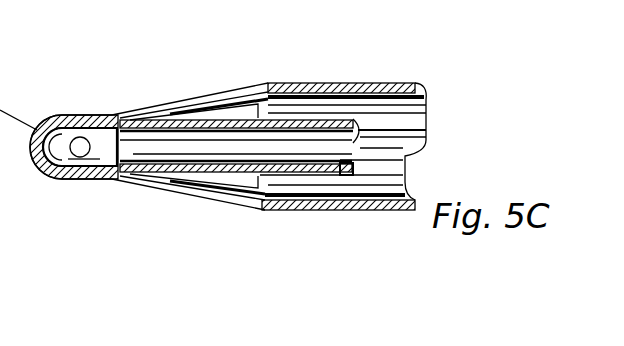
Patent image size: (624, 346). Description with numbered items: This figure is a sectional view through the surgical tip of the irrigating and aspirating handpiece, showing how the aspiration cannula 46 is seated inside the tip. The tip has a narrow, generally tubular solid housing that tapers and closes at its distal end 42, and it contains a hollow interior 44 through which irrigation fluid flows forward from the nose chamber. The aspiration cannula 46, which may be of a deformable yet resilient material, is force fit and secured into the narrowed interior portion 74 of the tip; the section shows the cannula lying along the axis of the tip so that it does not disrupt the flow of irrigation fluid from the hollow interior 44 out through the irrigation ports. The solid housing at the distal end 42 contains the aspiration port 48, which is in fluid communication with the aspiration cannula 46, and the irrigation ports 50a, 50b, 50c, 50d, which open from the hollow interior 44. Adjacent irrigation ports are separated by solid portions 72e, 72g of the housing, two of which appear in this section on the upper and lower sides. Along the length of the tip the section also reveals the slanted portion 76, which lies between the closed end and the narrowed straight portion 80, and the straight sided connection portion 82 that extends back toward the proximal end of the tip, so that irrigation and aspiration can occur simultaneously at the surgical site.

The narrowed interior portion 74 is at (66, 137).
The narrowed straight portion 80 is at (89, 126).
The aspiration port 48 is at (108, 183).
The irrigation port 50a is at (224, 94).
The irrigation port 50b is at (195, 107).
The irrigation port 50c is at (202, 198).
The irrigation port 50d is at (224, 205).
The slanted portion 76 is at (255, 84).
The solid portion 72e is at (251, 83).
The solid portion 72g is at (264, 212).
The aspiration cannula 46 is at (358, 118).
The distal end 42 is at (411, 82).
The hollow interior 44 is at (348, 207).
The straight sided connection portion 82 is at (365, 208).